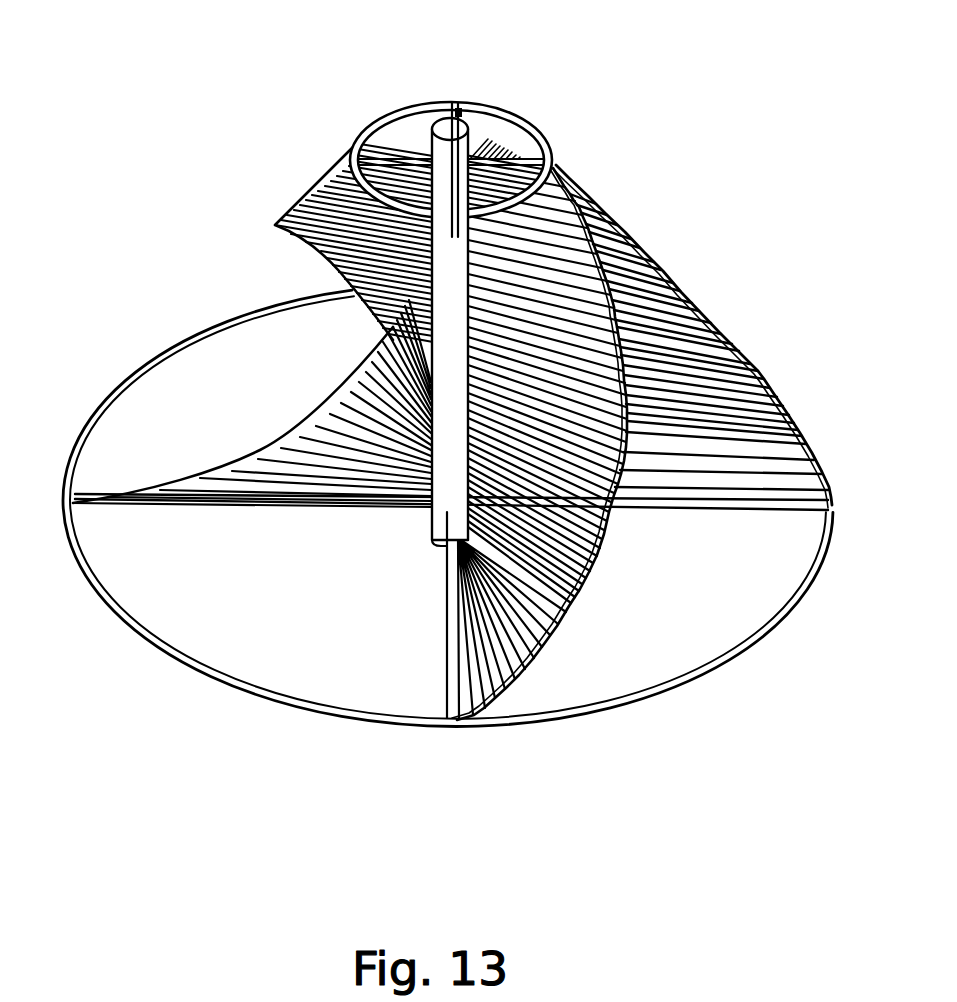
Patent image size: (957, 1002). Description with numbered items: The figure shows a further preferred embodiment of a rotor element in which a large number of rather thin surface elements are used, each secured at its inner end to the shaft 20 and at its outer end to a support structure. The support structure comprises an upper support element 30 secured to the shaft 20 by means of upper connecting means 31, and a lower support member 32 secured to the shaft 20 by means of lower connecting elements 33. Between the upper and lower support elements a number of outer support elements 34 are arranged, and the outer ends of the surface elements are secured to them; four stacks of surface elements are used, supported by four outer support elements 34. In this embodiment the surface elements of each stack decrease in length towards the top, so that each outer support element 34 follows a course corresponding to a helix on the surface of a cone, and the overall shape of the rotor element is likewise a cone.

The shaft 20 is at (458, 122).
The upper support element 30 is at (542, 118).
The upper connecting means 31 is at (393, 150).
The lower support member 32 is at (690, 680).
The lower connecting elements 33 is at (440, 685).
The outer support element 34 is at (303, 185).